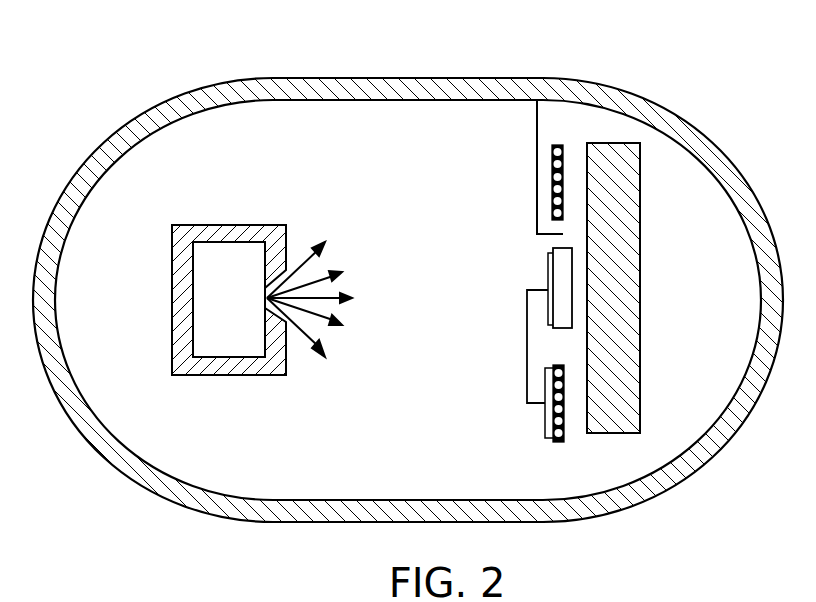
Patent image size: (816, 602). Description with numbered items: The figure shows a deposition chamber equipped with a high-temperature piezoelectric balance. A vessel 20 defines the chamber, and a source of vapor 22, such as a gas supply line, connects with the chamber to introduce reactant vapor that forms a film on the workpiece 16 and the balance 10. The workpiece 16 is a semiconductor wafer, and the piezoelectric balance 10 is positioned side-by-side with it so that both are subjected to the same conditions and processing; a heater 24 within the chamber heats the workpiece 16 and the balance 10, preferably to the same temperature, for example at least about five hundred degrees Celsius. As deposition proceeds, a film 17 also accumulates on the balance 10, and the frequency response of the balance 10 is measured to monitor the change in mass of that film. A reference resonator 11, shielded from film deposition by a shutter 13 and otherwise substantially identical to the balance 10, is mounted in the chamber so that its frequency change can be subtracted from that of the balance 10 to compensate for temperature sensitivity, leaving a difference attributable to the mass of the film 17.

The vessel 20 is at (349, 78).
The source of vapor 22 is at (218, 375).
The shutter 13 is at (537, 148).
The reference resonator 11 is at (557, 145).
The heater 24 is at (640, 253).
The workpiece 16 is at (553, 250).
The film 17 is at (527, 345).
The piezoelectric balance 10 is at (557, 445).